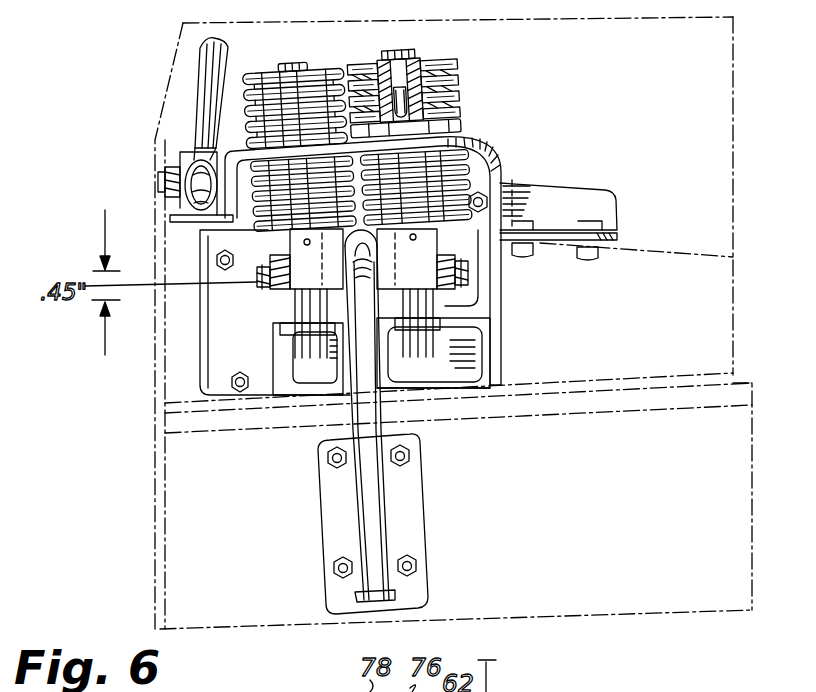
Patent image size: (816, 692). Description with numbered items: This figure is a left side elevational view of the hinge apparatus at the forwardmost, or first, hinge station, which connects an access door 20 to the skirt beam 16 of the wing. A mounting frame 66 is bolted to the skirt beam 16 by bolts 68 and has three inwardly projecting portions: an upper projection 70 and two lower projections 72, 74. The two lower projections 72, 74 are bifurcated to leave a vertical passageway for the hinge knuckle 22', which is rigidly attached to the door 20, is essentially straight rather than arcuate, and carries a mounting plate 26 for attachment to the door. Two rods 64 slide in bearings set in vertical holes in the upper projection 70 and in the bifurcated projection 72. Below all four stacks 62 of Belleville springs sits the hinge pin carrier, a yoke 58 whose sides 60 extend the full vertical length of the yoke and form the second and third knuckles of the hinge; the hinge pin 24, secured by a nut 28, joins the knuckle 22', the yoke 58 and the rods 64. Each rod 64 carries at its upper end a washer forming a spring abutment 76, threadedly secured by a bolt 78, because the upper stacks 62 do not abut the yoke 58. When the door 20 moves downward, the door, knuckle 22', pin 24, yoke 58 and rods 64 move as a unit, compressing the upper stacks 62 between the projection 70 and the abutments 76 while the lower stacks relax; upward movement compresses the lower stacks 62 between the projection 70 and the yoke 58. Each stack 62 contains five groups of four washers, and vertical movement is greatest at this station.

The skirt beam 16 is at (690, 220).
The access door 20 is at (590, 524).
The hinge knuckle 22' is at (328, 416).
The hinge pin 24 is at (450, 258).
The mounting plate 26 is at (420, 507).
The nut 28 is at (264, 292).
The yoke 58 is at (337, 230).
The sides of the yoke 60 is at (413, 273).
The stack of Belleville springs 62 is at (316, 74).
The rod 64 is at (314, 357).
The mounting frame 66 is at (505, 183).
The bolt 68 is at (475, 165).
The upper projection 70 is at (232, 150).
The lower projection 72 is at (468, 323).
The lower projection 74 is at (492, 382).
The spring abutment 76 is at (428, 52).
The bolt 78 is at (400, 58).